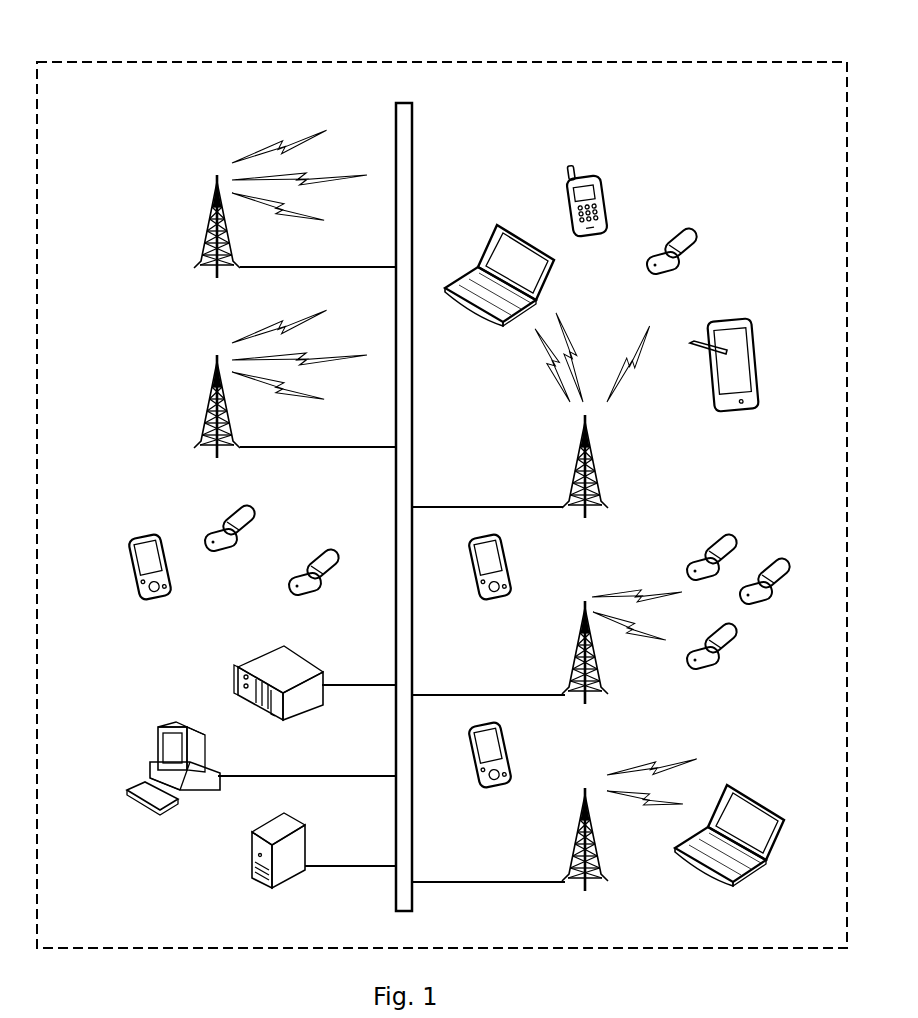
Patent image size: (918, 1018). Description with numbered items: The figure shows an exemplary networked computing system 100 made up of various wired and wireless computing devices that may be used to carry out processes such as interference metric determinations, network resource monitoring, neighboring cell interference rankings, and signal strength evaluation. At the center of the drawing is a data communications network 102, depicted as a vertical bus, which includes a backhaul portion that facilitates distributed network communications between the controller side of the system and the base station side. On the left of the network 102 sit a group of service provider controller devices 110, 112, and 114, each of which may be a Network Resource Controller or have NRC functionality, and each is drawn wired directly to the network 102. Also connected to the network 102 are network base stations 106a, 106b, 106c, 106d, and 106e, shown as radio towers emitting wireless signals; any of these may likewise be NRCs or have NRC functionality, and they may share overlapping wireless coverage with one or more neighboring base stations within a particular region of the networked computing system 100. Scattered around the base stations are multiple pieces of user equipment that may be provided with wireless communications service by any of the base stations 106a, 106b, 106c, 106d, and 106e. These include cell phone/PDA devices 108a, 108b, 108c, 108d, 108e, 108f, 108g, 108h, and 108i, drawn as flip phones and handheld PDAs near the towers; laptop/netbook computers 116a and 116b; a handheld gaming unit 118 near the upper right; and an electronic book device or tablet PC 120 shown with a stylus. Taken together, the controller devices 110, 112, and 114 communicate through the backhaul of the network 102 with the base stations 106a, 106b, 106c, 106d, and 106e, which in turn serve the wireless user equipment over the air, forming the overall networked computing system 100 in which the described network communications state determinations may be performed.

The networked computing system 100 is at (306, 34).
The data communications network 102 is at (396, 115).
The network base station 106a is at (187, 222).
The network base station 106b is at (186, 417).
The network base station 106c is at (575, 828).
The network base station 106d is at (575, 650).
The network base station 106e is at (603, 478).
The cell phone/PDA device 108a is at (132, 556).
The cell phone/PDA device 108b is at (222, 514).
The cell phone/PDA device 108c is at (290, 592).
The cell phone/PDA device 108d is at (508, 742).
The cell phone/PDA device 108e is at (725, 668).
The cell phone/PDA device 108f is at (778, 598).
The cell phone/PDA device 108g is at (735, 540).
The cell phone/PDA device 108h is at (508, 548).
The cell phone/PDA device 108i is at (700, 237).
The service provider controller device 110 is at (235, 683).
The service provider controller device 112 is at (158, 725).
The service provider controller device 114 is at (252, 870).
The laptop/netbook computer 116a is at (744, 790).
The laptop/netbook computer 116b is at (494, 226).
The handheld gaming unit 118 is at (606, 185).
The electronic book device or tablet PC 120 is at (758, 341).